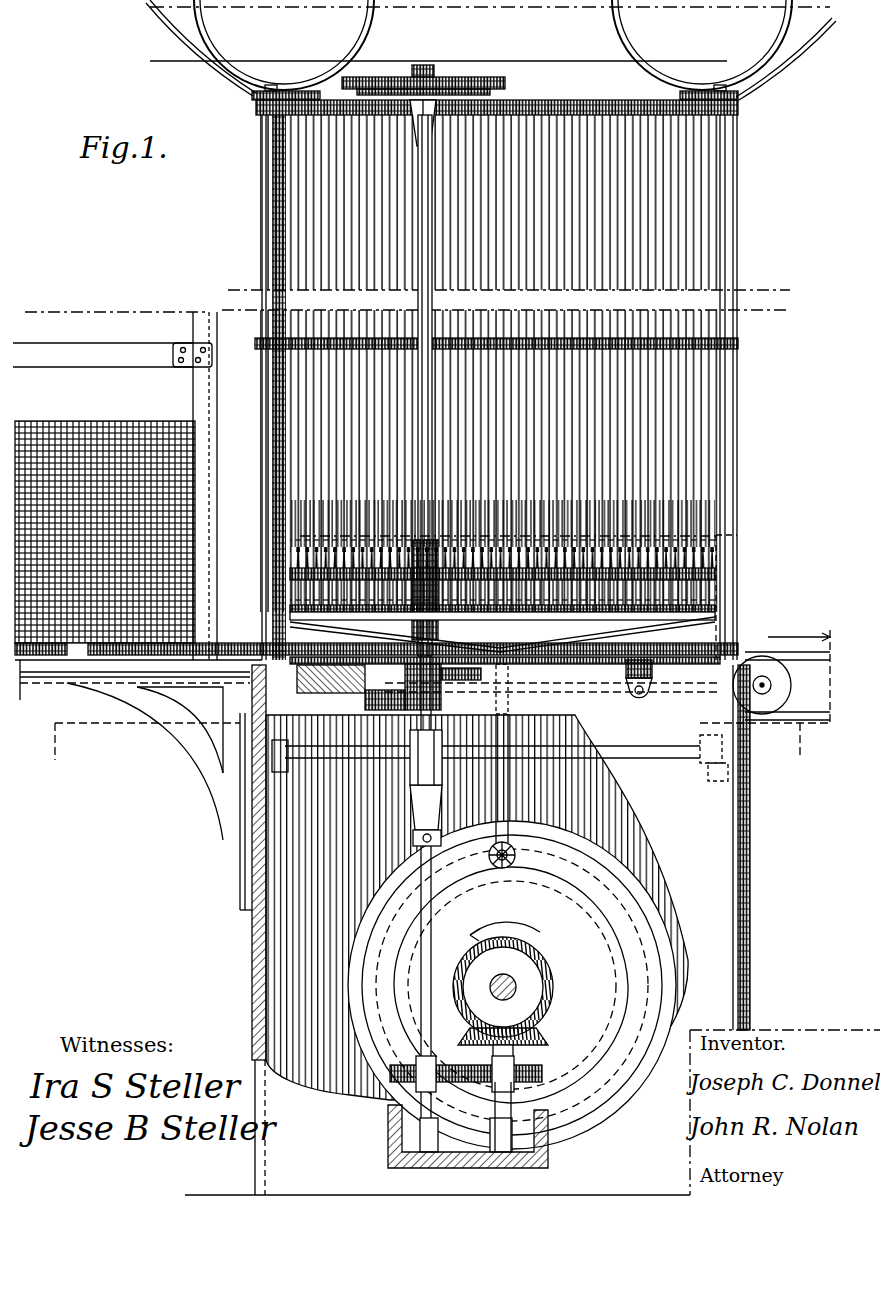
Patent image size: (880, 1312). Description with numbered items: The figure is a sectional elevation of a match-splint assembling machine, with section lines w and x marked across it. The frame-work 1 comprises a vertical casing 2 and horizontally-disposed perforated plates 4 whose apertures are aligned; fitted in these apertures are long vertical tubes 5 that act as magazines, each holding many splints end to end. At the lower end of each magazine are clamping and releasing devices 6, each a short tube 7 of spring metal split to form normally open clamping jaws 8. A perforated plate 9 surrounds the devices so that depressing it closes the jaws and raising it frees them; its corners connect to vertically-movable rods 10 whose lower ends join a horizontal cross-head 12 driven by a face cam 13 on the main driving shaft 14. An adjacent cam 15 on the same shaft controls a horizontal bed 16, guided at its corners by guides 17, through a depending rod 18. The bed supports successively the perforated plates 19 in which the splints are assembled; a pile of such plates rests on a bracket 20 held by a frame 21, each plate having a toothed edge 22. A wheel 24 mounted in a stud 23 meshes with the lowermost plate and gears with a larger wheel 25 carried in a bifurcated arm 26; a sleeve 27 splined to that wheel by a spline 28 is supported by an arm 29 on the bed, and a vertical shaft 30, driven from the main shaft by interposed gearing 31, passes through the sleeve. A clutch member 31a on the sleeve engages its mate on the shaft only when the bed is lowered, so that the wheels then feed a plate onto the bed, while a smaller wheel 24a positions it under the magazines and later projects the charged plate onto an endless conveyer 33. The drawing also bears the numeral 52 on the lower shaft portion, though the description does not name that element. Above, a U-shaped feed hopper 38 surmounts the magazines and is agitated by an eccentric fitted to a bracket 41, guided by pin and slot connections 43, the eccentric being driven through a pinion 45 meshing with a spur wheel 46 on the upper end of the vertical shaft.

The frame-work 1 is at (738, 784).
The vertical casing 2 is at (750, 872).
The perforated plates 4 is at (740, 112).
The vertical tubes 5 is at (262, 248).
The clamping and releasing devices 6 is at (300, 594).
The short tube 7 is at (300, 514).
The clamping jaws 8 is at (300, 561).
The perforated plate 9 is at (700, 572).
The vertically-movable rods 10 is at (288, 625).
The horizontal cross-head 12 is at (613, 758).
The cam 13 is at (660, 958).
The main driving shaft 14 is at (518, 990).
The cam 15 is at (627, 918).
The horizontal bed 16 is at (612, 665).
The guides 17 is at (737, 607).
The rod 18 is at (512, 725).
The perforated plates 19 is at (112, 428).
The bracket 20 is at (137, 698).
The frame 21 is at (209, 414).
The milled or toothed edge 22 is at (47, 660).
The stud 23 is at (205, 657).
The wheel 24 is at (165, 660).
The smaller wheel 24a is at (733, 712).
The larger wheel 25 is at (528, 665).
The slotted or bifurcated arm 26 is at (458, 708).
The sleeve 27 is at (400, 718).
The spline 28 is at (405, 694).
The outwardly extending arm 29 is at (380, 698).
The vertical shaft 30 is at (432, 898).
The interposed gearing 31 is at (543, 1062).
The clutch member 31a is at (412, 772).
The endless conveyer 33 is at (781, 676).
The feed hopper 38 is at (566, 54).
The bracket 41 is at (428, 72).
The pin and slot connections 43 is at (258, 95).
The pinion 45 is at (738, 90).
The spur wheel 46 is at (470, 77).
The shaft 52 is at (422, 812).
The section line w— w is at (740, 540).
The section line x— x is at (440, 707).